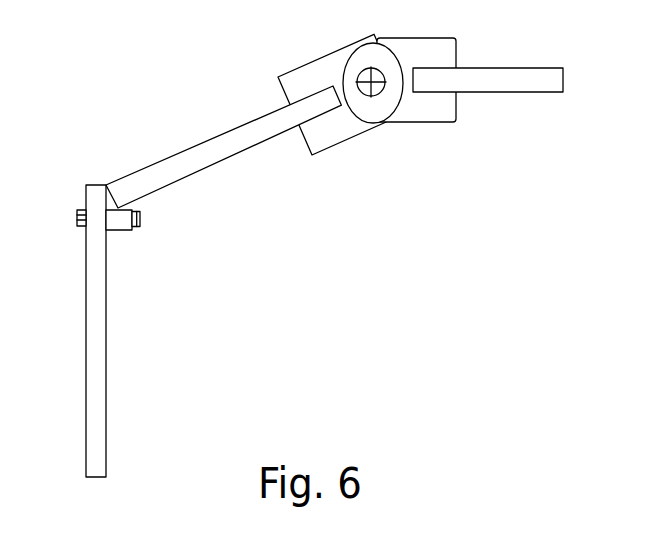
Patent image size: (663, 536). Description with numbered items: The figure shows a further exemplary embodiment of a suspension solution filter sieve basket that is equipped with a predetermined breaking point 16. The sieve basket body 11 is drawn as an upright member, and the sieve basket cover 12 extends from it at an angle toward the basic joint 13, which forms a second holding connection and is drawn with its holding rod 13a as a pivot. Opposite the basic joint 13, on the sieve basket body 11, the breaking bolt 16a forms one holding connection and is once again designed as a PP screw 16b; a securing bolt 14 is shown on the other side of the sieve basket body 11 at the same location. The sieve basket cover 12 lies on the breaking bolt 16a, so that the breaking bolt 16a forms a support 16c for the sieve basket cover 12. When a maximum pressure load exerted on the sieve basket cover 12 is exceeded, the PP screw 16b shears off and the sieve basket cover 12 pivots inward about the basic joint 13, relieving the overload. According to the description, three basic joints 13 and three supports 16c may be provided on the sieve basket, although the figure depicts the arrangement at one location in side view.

The sieve basket body 11 is at (97, 317).
The sieve basket cover 12 is at (220, 150).
The basic joint 13 is at (383, 101).
The holding rod 13a is at (357, 82).
The securing bolt 14 is at (77, 222).
The predetermined breaking point 16 is at (207, 281).
The breaking bolt 16a is at (140, 210).
The PP screw 16b is at (140, 217).
The support 16c is at (117, 220).